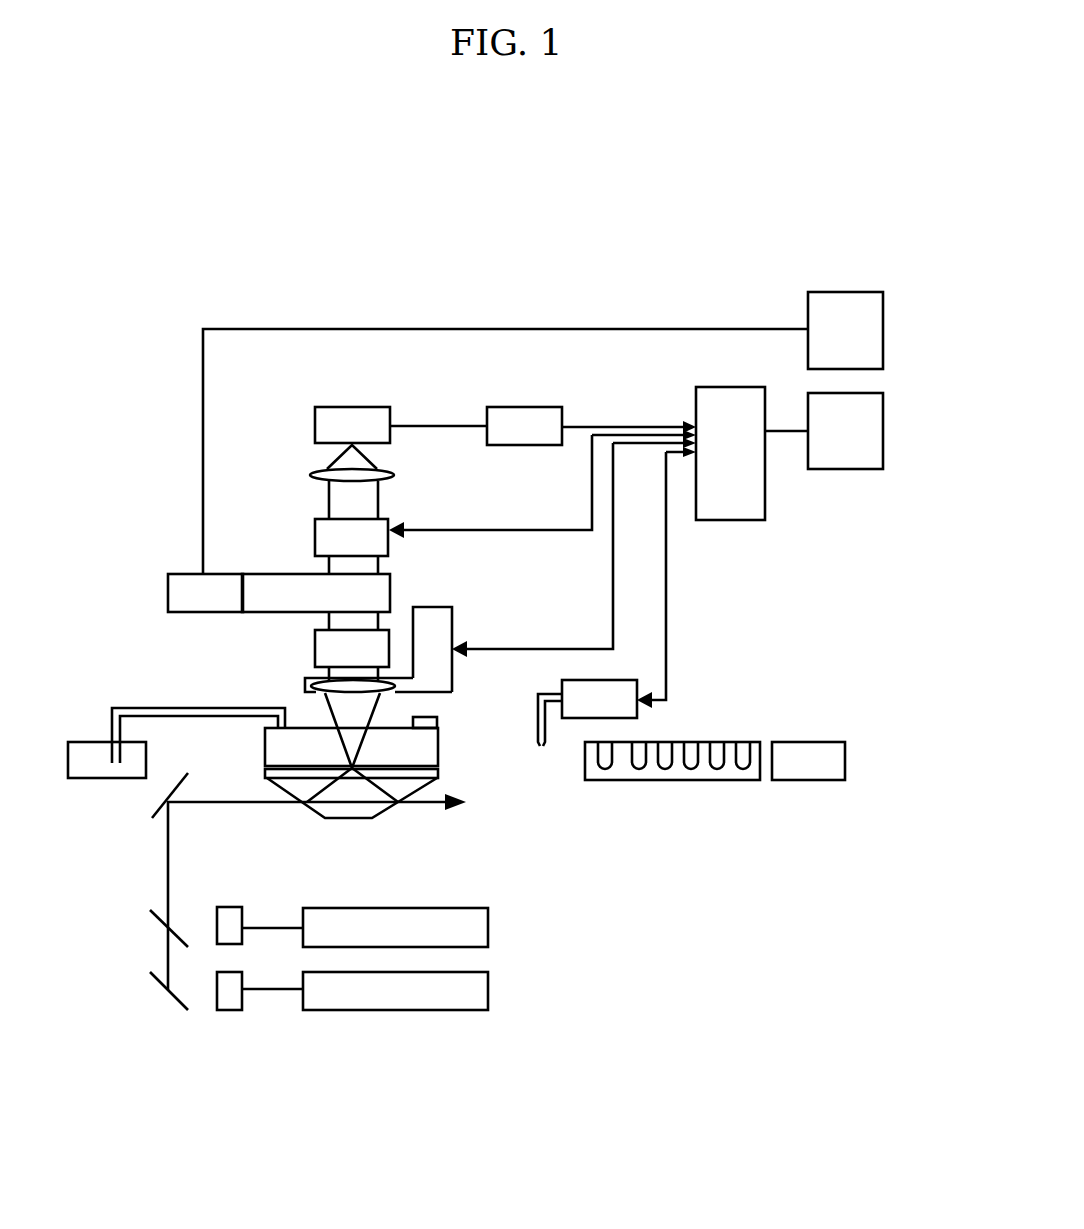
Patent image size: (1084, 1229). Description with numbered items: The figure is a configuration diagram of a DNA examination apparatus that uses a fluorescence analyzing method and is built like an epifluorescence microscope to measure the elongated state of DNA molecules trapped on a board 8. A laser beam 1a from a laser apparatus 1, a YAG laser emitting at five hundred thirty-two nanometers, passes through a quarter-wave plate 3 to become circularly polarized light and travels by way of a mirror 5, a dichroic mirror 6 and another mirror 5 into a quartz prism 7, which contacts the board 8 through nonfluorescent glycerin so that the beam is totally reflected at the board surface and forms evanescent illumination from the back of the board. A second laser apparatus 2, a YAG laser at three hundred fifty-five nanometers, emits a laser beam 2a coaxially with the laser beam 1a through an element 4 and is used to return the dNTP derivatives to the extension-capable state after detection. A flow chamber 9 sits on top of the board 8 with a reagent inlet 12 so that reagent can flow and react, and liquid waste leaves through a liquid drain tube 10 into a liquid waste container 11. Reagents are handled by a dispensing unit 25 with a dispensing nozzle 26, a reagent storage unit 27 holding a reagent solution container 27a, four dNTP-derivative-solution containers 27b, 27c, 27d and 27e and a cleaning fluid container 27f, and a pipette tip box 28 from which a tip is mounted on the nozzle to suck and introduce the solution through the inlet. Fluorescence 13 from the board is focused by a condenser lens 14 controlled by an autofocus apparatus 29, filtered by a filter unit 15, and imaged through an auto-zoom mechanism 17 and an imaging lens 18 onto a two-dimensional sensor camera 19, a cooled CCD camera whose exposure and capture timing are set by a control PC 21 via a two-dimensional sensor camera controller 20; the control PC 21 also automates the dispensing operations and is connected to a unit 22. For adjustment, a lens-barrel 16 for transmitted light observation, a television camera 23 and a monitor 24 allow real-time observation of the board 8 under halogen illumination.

The laser apparatus 1 is at (450, 1000).
The laser beam 1a is at (268, 991).
The laser apparatus 2 is at (385, 918).
The laser beam 2a is at (258, 930).
The quarter-wave plate 3 is at (235, 1002).
The shutter 4 is at (233, 907).
The mirror 5 is at (160, 808).
The dichroic mirror 6 is at (158, 922).
The quartz prism 7 is at (333, 806).
The board 8 is at (263, 774).
The flow chamber 9 is at (263, 750).
The liquid drain tube 10 is at (118, 706).
The liquid waste container 11 is at (78, 780).
The reagent inlet 12 is at (437, 722).
The fluorescence 13 is at (353, 710).
The condenser lens 14 is at (305, 686).
The filter unit 15 is at (313, 648).
The lens-barrel 16 is at (294, 593).
The auto-zoom mechanism 17 is at (386, 522).
The imaging lens 18 is at (313, 473).
The two-dimensional sensor camera 19 is at (370, 412).
The two-dimensional sensor camera controller 20 is at (548, 414).
The control PC 21 is at (733, 400).
The display 22 is at (855, 440).
The television camera 23 is at (168, 596).
The monitor 24 is at (848, 352).
The dispensing unit 25 is at (618, 692).
The dispensing nozzle 26 is at (540, 748).
The reagent storage unit 27 is at (728, 738).
The reagent solution container 27a is at (605, 770).
The dNTP-derivative-solution container 27b is at (639, 770).
The dNTP-derivative-solution container 27c is at (665, 770).
The dNTP-derivative-solution container 27d is at (691, 770).
The dNTP-derivative-solution container 27e is at (717, 770).
The cleaning fluid container 27f is at (743, 770).
The pipette tip box 28 is at (798, 742).
The autofocus apparatus 29 is at (440, 614).